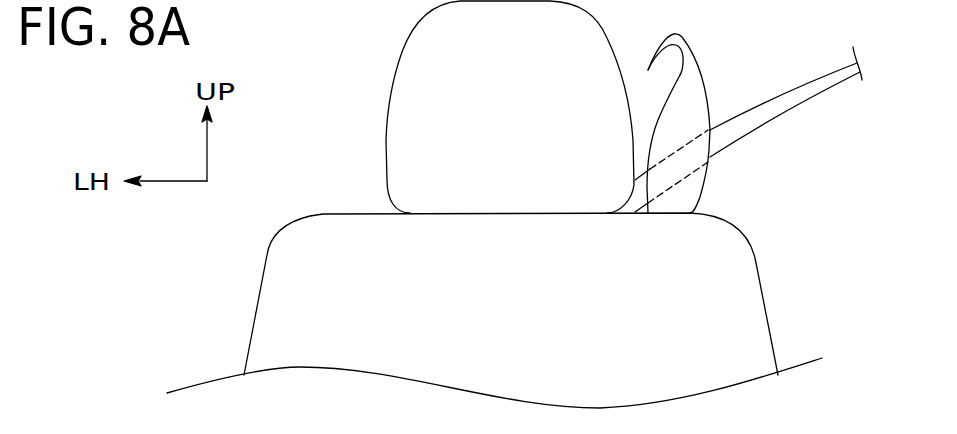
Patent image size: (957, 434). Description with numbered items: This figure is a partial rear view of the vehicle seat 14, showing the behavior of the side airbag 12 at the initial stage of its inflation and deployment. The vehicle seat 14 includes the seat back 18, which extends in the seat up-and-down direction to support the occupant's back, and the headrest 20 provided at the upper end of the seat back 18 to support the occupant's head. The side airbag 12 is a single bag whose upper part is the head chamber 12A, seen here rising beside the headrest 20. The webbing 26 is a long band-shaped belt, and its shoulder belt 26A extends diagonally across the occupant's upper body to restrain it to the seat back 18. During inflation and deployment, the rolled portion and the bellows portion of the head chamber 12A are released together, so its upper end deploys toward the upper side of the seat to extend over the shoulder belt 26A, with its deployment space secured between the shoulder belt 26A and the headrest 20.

The side airbag 12 is at (738, 135).
The head chamber 12A is at (695, 99).
The vehicle seat 14 is at (248, 337).
The seat back 18 is at (258, 272).
The headrest 20 is at (393, 82).
The shoulder belt 26A is at (771, 130).
The webbing 26 is at (788, 105).